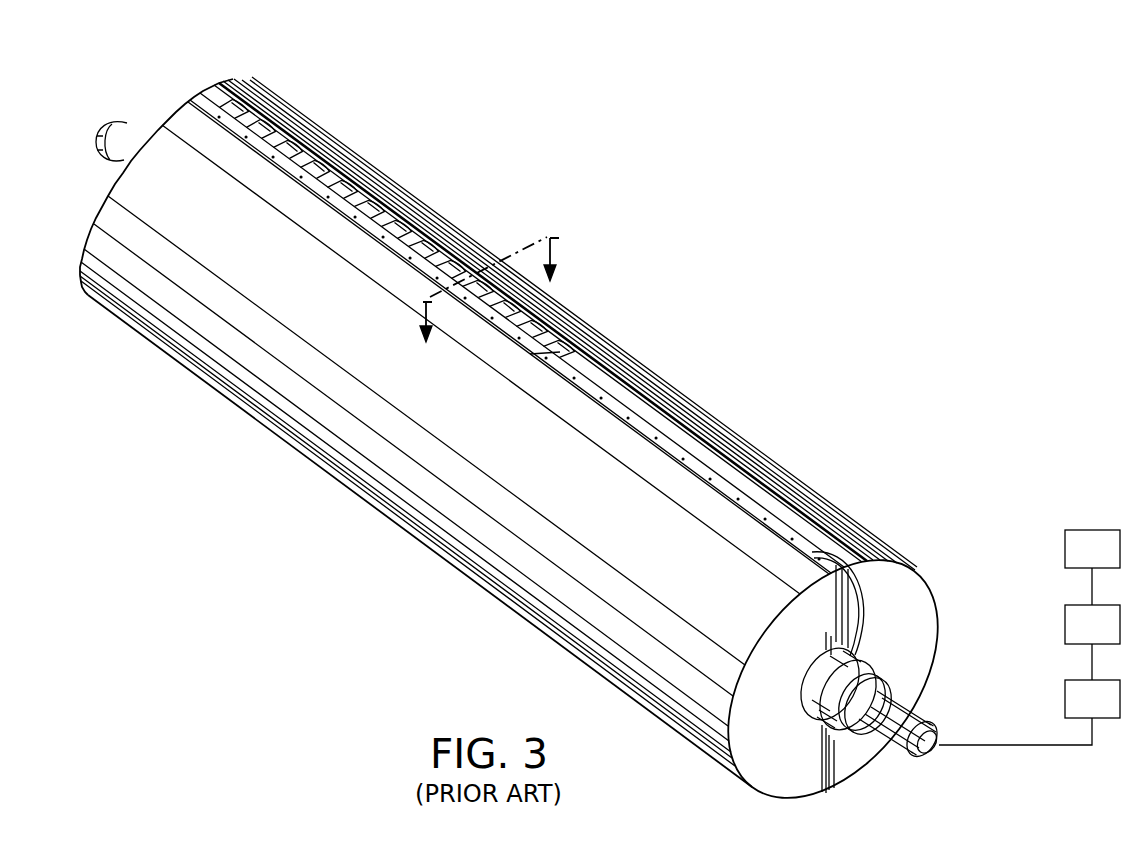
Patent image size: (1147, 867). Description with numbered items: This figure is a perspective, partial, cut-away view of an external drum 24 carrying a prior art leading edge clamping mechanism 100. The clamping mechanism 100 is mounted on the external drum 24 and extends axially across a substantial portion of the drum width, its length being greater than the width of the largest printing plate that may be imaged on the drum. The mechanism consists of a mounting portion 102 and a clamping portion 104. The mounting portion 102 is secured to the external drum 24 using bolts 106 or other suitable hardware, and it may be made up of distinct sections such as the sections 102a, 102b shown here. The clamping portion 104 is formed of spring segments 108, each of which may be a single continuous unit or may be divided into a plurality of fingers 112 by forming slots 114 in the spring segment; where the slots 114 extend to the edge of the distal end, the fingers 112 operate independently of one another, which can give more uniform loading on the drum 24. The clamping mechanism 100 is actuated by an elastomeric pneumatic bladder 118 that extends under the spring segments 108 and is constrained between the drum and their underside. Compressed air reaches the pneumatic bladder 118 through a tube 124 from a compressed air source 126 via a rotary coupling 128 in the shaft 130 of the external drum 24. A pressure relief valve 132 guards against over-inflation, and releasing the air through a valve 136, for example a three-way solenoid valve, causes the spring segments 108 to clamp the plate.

The leading edge clamping mechanism 100 is at (528, 113).
The external drum 24 is at (449, 545).
The mounting portion 102 is at (188, 100).
The mounting portion section 102a is at (656, 414).
The mounting portion section 102b is at (294, 167).
The clamping portion 104 is at (586, 293).
The bolts 106 is at (538, 353).
The spring segment 108 is at (456, 276).
The fingers 112 is at (270, 121).
The slots 114 is at (418, 231).
The pneumatic bladder 118 is at (778, 511).
The tube 124 is at (901, 562).
The rotary coupling 128 is at (934, 756).
The shaft 130 is at (868, 748).
The compressed air source 126 is at (1110, 560).
The pressure relief valve 132 is at (1110, 635).
The valve 136 is at (1110, 710).